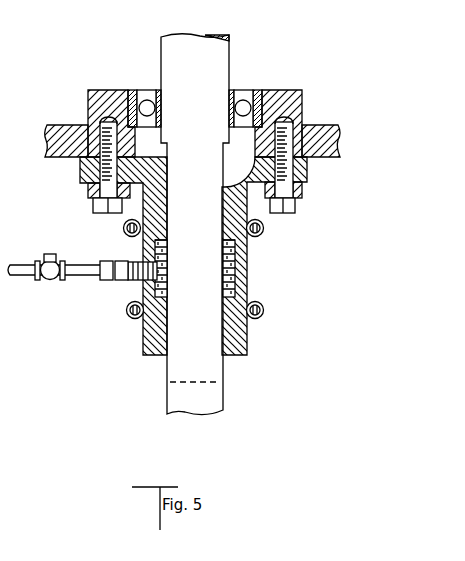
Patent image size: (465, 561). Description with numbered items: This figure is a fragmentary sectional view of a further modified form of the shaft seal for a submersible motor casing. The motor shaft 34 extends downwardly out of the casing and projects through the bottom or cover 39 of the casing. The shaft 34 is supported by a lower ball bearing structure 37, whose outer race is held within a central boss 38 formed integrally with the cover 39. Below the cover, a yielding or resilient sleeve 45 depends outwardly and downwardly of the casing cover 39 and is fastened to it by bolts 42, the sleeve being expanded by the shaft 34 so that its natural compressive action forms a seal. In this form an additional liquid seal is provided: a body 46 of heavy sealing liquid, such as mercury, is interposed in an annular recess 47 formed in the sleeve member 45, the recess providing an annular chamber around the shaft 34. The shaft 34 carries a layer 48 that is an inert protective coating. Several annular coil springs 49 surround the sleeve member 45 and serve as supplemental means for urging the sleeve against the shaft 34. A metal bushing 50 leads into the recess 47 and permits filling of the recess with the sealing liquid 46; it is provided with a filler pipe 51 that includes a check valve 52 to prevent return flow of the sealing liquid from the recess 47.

The shaft 34 is at (226, 52).
The lower ball bearing structure 37 is at (256, 82).
The central boss 38 is at (89, 101).
The cover 39 is at (62, 128).
The bolts 42 is at (95, 212).
The resilient sleeve 45 is at (246, 356).
The body of heavy sealing liquid 46 is at (248, 281).
The annular recess 47 is at (248, 263).
The layer 48 is at (167, 380).
The annular coil springs 49 is at (123, 229).
The metal bushing 50 is at (133, 283).
The filler pipe 51 is at (18, 264).
The check valve 52 is at (46, 281).